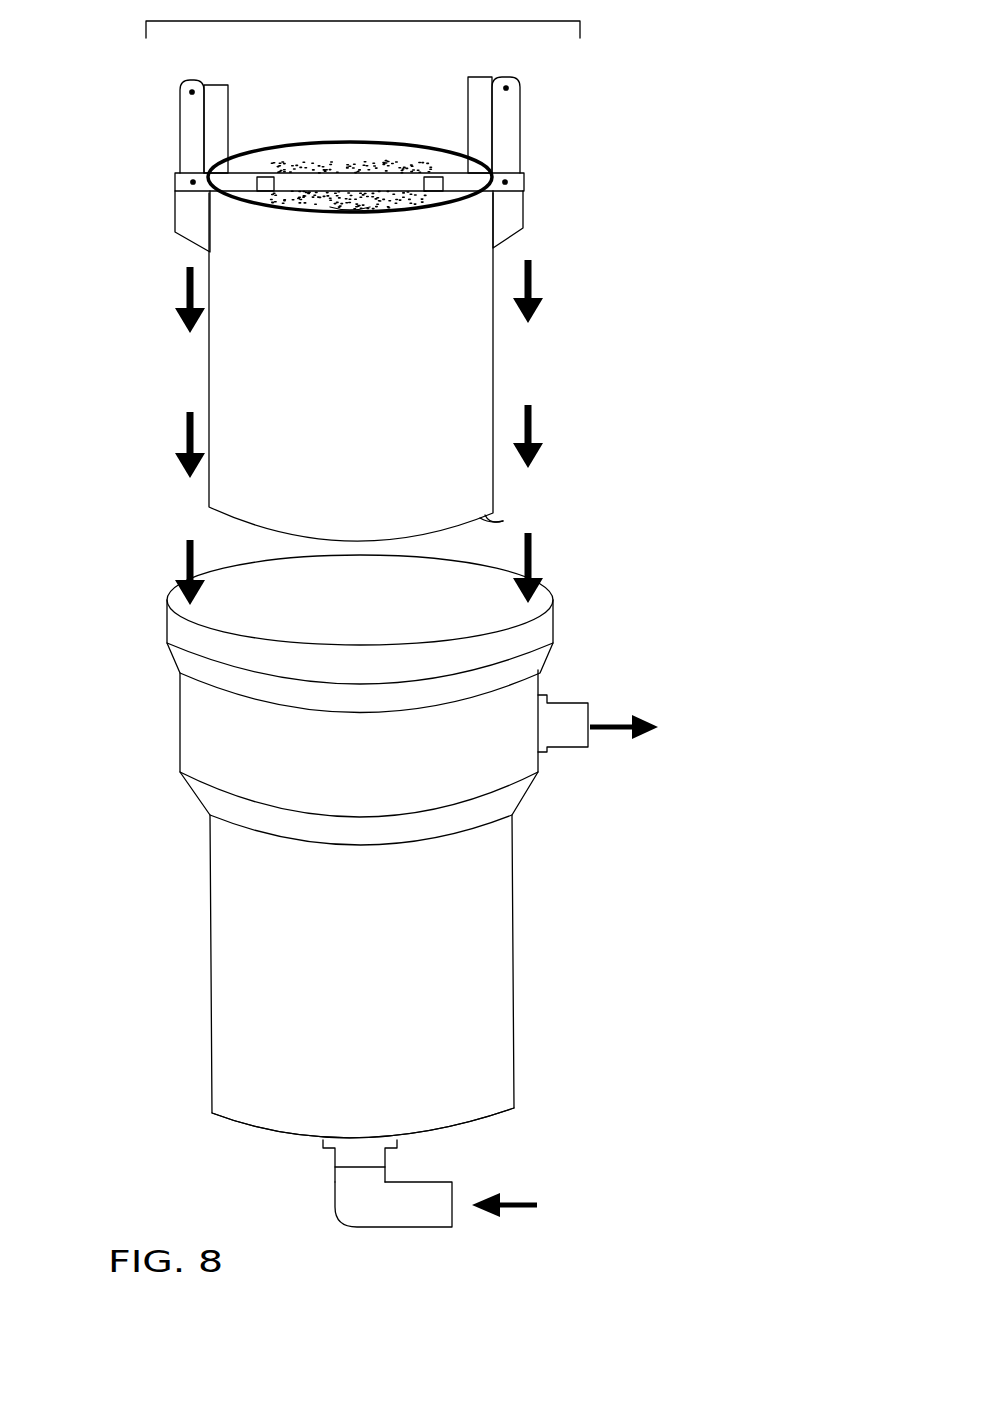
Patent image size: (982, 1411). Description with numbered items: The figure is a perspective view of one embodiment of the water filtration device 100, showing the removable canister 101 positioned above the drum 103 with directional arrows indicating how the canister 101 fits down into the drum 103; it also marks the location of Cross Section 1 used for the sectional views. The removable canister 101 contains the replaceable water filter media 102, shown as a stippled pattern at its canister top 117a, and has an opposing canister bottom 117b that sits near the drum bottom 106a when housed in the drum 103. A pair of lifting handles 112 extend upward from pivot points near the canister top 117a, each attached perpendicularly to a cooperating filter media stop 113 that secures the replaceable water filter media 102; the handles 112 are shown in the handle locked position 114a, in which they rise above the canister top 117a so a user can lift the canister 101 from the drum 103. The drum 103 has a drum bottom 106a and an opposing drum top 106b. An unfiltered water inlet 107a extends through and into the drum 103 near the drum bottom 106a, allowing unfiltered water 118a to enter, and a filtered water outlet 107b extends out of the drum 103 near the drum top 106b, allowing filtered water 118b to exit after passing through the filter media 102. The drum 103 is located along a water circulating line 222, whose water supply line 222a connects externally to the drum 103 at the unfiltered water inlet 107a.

The Cross Section 1- 1 is at (366, 47).
The water filtration device 100 is at (672, 522).
The removable canister 101 is at (493, 332).
The replaceable water filter media 102 is at (357, 177).
The drum 103 is at (513, 908).
The drum bottom 106a is at (257, 1130).
The drum top 106b is at (387, 645).
The unfiltered water inlet 107a is at (385, 1158).
The filtered water outlet 107b is at (565, 703).
The lifting handle 112 is at (215, 82).
The cooperating filter media stop 113 is at (268, 175).
The handle locked position 114a is at (180, 112).
The canister top 117a is at (345, 214).
The canister bottom 117b is at (503, 521).
The unfiltered water 118a is at (520, 1198).
The filtered water 118b is at (615, 722).
The water circulating line 222 is at (457, 1225).
The water supply line 222a is at (420, 1230).